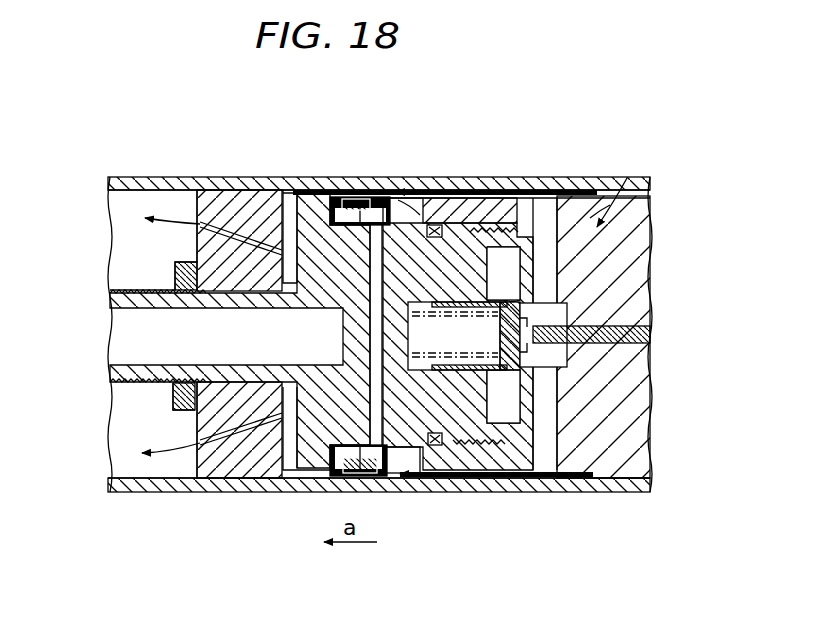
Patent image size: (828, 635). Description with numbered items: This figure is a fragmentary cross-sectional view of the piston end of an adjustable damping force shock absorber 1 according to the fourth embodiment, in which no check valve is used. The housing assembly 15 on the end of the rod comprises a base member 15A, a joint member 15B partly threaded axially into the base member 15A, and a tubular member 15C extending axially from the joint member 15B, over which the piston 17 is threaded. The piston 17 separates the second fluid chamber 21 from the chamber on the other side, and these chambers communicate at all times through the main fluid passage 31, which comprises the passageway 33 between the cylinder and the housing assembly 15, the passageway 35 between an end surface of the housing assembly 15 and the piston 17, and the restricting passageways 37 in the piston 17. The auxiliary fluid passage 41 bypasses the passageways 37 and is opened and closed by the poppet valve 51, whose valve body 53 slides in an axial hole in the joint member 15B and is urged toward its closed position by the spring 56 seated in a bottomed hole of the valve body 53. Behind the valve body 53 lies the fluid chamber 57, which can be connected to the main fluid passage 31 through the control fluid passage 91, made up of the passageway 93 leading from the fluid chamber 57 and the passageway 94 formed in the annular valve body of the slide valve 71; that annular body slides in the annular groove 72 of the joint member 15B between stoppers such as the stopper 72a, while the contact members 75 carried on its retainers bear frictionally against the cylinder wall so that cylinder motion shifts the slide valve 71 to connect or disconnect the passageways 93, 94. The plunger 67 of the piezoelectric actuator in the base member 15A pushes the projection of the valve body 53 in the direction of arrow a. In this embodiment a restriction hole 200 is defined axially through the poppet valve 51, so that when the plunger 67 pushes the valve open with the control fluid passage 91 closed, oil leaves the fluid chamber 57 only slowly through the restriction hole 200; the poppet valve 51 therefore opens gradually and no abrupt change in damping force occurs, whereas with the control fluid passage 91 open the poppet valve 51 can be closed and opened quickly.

The shock absorber 1 is at (487, 180).
The housing assembly 15 is at (602, 177).
The base member 15A is at (633, 222).
The joint member 15B is at (443, 177).
The tubular member 15C is at (153, 382).
The piston 17 is at (242, 480).
The second fluid chamber 21 is at (130, 255).
The main fluid passage 31 is at (623, 178).
The passageway 33 is at (523, 177).
The passageway 35 is at (277, 177).
The passageways 37 is at (245, 188).
The auxiliary fluid passage 41 is at (539, 281).
The poppet valve 51 is at (547, 440).
The valve body 53 is at (521, 430).
The spring 56 is at (455, 340).
The fluid chamber 57 is at (485, 345).
The plunger 67 is at (622, 322).
The slide valve 71 is at (403, 177).
The annular groove 72 is at (468, 177).
The stopper 72a is at (335, 177).
The contact members 75 is at (363, 177).
The control fluid passage 91 is at (313, 178).
The passageway 93 is at (337, 177).
The passageway 94 is at (382, 177).
The restriction hole 200 is at (572, 298).